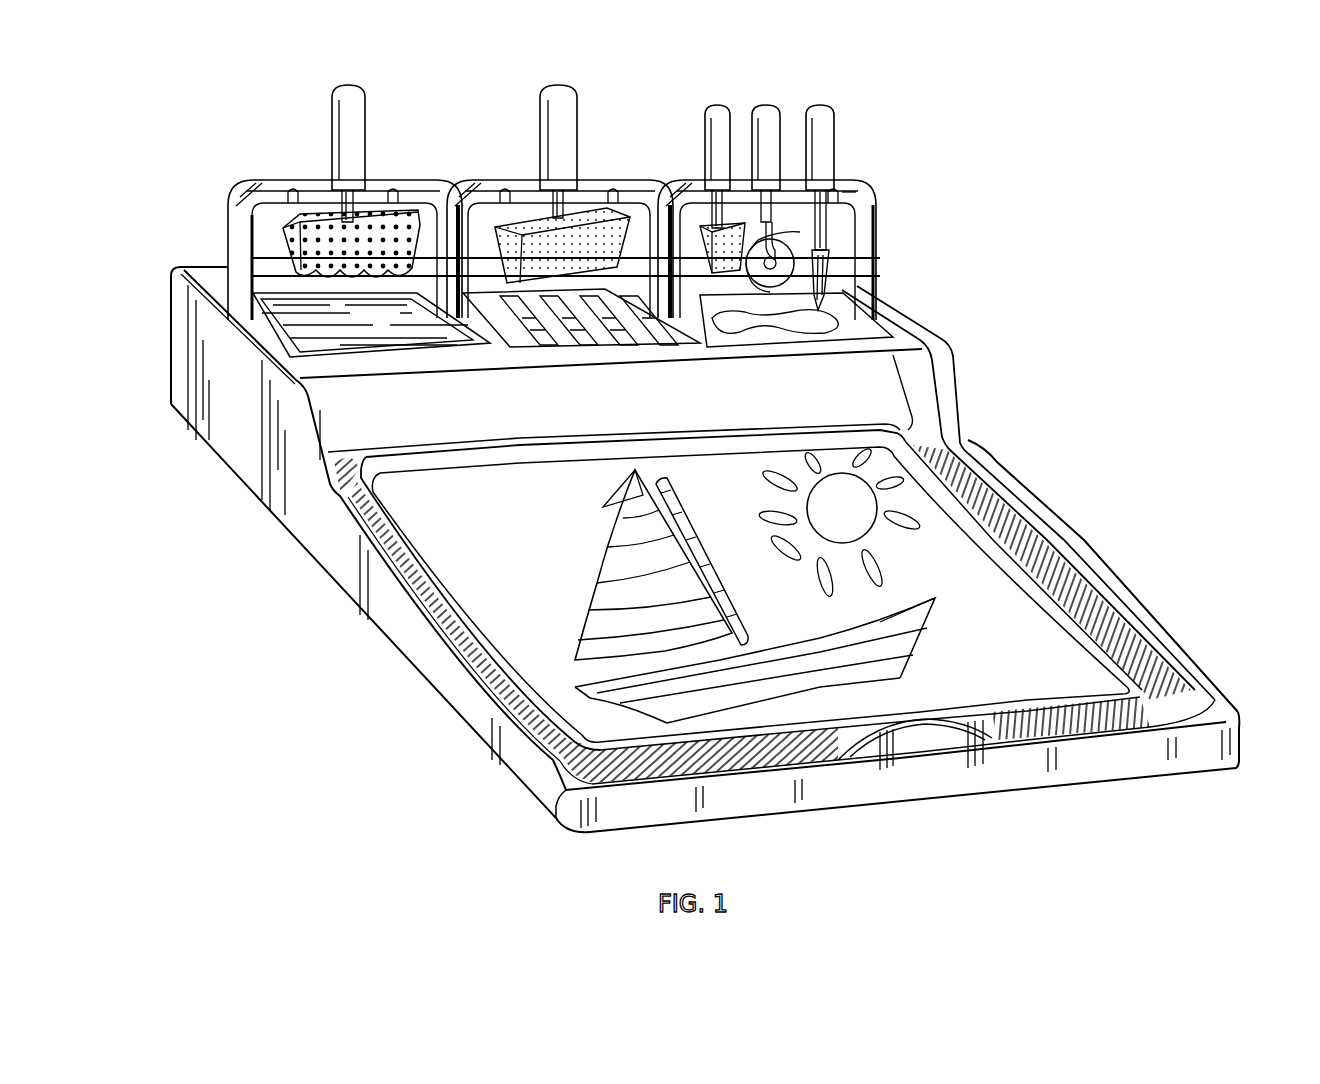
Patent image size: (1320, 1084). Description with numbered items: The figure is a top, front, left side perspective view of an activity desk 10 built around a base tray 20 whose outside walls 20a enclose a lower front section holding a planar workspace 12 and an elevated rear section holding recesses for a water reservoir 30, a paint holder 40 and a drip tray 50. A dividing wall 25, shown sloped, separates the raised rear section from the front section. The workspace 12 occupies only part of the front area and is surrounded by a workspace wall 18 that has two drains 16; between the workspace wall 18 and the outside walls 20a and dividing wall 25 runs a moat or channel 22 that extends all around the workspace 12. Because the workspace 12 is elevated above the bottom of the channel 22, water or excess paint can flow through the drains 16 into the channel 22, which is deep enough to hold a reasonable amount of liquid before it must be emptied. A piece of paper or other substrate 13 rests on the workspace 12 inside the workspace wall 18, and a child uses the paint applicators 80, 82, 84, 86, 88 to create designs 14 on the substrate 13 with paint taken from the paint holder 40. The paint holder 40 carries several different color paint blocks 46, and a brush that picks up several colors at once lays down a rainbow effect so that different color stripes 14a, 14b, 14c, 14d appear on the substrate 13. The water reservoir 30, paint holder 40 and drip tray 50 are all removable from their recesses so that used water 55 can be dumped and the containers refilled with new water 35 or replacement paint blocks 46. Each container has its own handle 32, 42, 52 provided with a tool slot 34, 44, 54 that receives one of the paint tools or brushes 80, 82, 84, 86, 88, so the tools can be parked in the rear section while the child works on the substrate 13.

The activity desk 10 is at (990, 366).
The workspace 12 is at (560, 798).
The substrate 13 is at (462, 538).
The designs 14 is at (607, 543).
The color stripe 14a is at (930, 600).
The color stripe 14b is at (924, 631).
The color stripe 14c is at (912, 656).
The color stripe 14d is at (902, 678).
The drains 16 is at (560, 770).
The workspace wall 18 is at (470, 625).
The base tray 20 is at (224, 399).
The outside walls 20a is at (1065, 540).
The channel 22 is at (1142, 640).
The dividing wall 25 is at (731, 413).
The water reservoir 30 is at (320, 350).
The handle 32 is at (375, 185).
The tool slot 34 is at (400, 188).
The new water 35 is at (366, 336).
The paint holder 40 is at (545, 350).
The handle 42 is at (588, 188).
The tool slot 44 is at (608, 190).
The paint blocks 46 is at (570, 345).
The drip tray 50 is at (872, 322).
The handle 52 is at (842, 188).
The tool slot 54 is at (855, 190).
The used water 55 is at (779, 334).
The paint applicator 80 is at (332, 120).
The paint applicator 82 is at (540, 114).
The paint applicator 84 is at (708, 118).
The paint applicator 86 is at (766, 100).
The paint applicator 88 is at (840, 105).